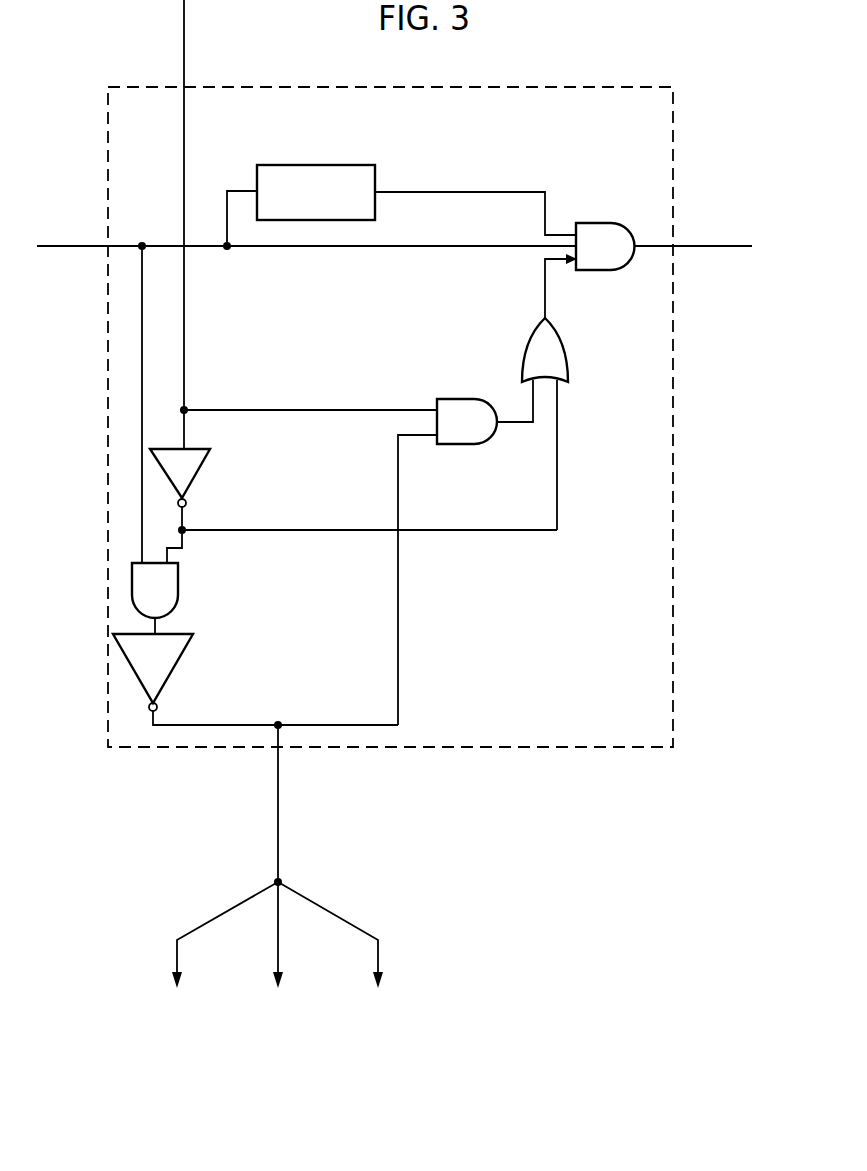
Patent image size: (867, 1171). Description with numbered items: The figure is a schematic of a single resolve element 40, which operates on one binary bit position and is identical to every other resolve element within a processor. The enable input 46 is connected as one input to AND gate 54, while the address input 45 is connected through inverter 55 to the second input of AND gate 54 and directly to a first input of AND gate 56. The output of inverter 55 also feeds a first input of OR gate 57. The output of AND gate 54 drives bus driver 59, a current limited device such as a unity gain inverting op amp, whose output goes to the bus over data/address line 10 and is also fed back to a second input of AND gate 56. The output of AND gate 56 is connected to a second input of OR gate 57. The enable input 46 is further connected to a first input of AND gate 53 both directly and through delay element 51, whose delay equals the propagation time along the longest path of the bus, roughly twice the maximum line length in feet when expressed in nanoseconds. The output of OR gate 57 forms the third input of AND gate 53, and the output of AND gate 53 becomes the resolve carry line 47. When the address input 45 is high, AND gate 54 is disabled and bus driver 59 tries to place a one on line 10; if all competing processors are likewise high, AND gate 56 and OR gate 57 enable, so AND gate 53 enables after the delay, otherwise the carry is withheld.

The data/address line 10 is at (278, 818).
The resolve element 40 is at (565, 87).
The address input 45 is at (185, 43).
The enable input 46 is at (100, 246).
The resolve carry line 47 is at (686, 247).
The delay element 51 is at (320, 165).
The AND gate 53 is at (613, 223).
The AND gate 54 is at (172, 593).
The inverter 55 is at (195, 468).
The AND gate 56 is at (460, 399).
The OR gate 57 is at (568, 345).
The bus driver 59 is at (168, 675).